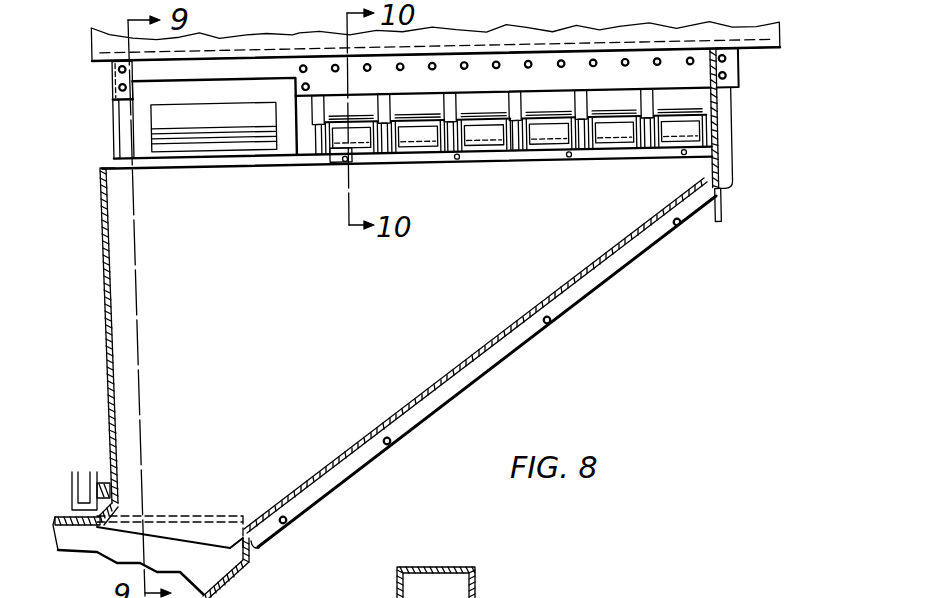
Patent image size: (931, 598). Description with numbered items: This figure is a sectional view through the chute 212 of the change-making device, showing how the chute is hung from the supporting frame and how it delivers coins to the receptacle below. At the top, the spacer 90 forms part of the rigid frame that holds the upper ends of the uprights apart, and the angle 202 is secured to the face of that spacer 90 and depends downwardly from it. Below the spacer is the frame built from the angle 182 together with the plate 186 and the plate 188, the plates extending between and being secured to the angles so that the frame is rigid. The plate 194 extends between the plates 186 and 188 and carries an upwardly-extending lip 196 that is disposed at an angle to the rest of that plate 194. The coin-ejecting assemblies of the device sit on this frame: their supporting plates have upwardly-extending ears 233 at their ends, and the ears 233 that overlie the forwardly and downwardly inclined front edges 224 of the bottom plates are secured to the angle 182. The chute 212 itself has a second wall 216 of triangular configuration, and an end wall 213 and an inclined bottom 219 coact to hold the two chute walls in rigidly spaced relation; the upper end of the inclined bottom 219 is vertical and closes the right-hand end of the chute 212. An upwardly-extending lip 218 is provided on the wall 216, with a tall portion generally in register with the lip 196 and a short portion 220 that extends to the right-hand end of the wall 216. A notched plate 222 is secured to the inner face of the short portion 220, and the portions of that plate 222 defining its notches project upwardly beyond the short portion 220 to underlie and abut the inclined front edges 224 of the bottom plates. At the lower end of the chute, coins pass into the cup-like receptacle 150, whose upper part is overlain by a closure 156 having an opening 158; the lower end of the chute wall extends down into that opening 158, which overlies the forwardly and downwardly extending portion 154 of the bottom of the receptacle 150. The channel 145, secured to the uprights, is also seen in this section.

The spacer 90 is at (483, 597).
The channel 145 is at (72, 480).
The cup-like receptacle 150 is at (106, 545).
The forwardly and downwardly extending portion 154 is at (233, 577).
The closure 156 is at (68, 513).
The opening 158 is at (62, 533).
The angle 182 is at (492, 89).
The plate 186 is at (113, 133).
The plate 188 is at (296, 163).
The plate 194 is at (198, 150).
The upwardly-extending lip 196 is at (212, 103).
The angle 202 is at (92, 47).
The chute 212 is at (583, 366).
The end wall 213 is at (101, 351).
The second wall 216 is at (433, 414).
The upwardly-extending lip 218 is at (238, 160).
The inclined bottom 219 is at (717, 161).
The short portion 220 is at (313, 155).
The notched plate 222 is at (432, 152).
The forwardly and downwardly inclined front edges 224 is at (367, 142).
The upwardly-extending ears 233 is at (408, 100).